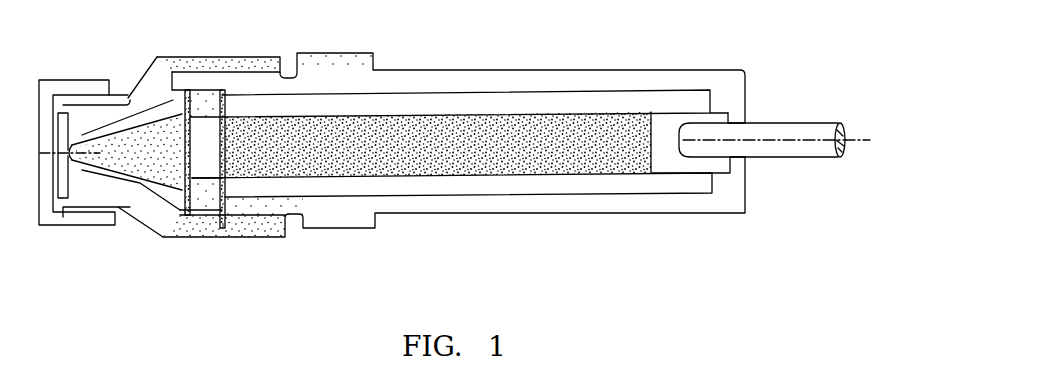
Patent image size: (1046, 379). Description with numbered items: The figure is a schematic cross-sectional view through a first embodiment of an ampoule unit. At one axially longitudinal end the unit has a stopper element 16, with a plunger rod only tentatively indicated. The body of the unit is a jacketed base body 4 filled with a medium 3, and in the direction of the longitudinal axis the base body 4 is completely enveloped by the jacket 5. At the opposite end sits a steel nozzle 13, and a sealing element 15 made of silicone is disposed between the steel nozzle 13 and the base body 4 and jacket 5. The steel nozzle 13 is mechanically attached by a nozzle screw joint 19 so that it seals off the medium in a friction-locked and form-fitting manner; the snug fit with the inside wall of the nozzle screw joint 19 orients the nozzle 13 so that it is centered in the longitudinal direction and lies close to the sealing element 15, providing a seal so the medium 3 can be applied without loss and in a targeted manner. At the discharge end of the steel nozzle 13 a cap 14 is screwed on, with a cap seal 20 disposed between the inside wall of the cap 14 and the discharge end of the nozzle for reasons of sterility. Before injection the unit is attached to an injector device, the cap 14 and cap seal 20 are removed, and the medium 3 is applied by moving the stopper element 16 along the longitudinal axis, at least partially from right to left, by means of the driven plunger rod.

The medium 3 is at (440, 127).
The base body 4 is at (563, 110).
The jacket 5 is at (617, 130).
The steel nozzle 13 is at (137, 115).
The cap 14 is at (63, 90).
The sealing element 15 is at (199, 106).
The stopper element 16 is at (672, 127).
The nozzle screw joint 19 is at (162, 88).
The cap seal 20 is at (67, 136).